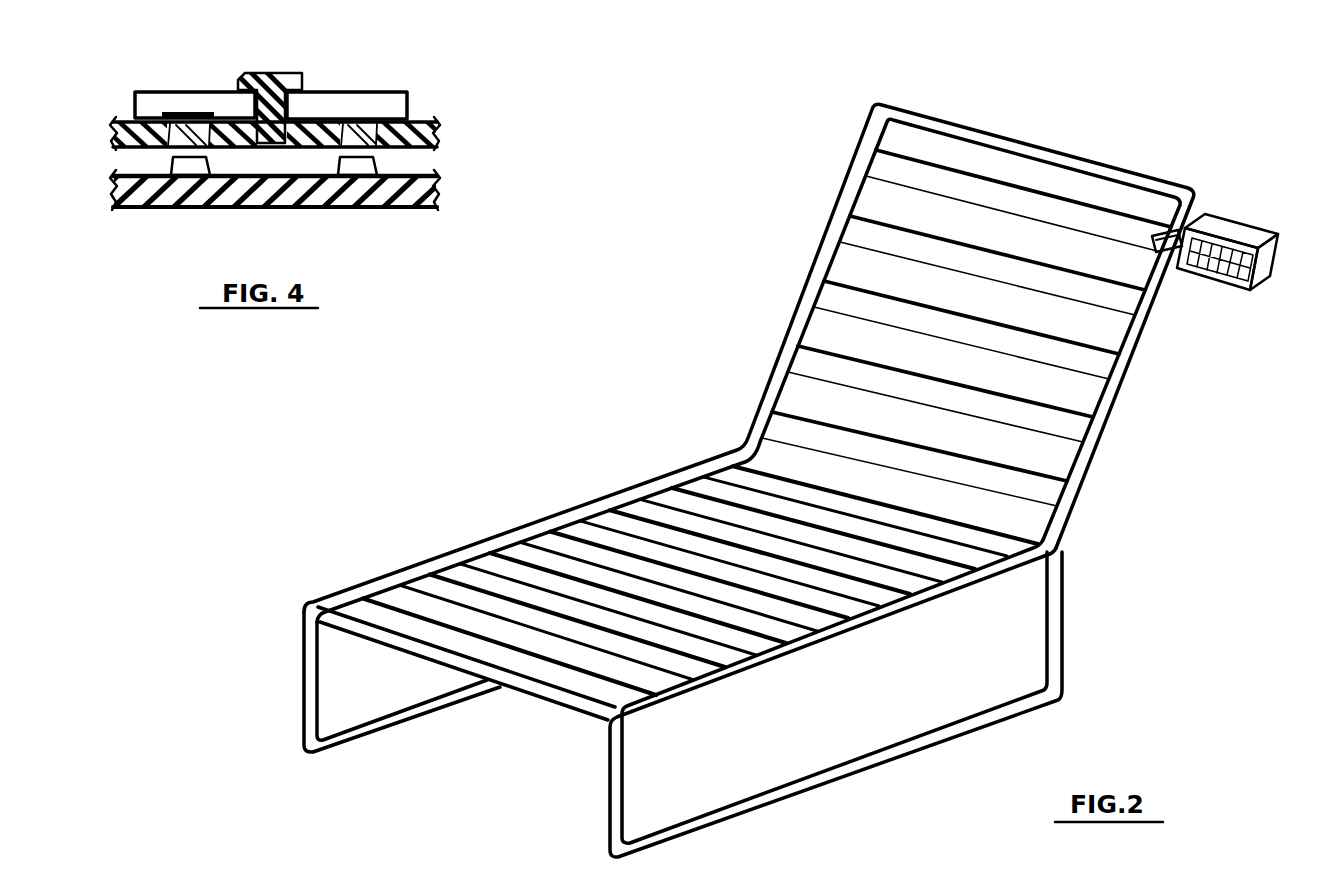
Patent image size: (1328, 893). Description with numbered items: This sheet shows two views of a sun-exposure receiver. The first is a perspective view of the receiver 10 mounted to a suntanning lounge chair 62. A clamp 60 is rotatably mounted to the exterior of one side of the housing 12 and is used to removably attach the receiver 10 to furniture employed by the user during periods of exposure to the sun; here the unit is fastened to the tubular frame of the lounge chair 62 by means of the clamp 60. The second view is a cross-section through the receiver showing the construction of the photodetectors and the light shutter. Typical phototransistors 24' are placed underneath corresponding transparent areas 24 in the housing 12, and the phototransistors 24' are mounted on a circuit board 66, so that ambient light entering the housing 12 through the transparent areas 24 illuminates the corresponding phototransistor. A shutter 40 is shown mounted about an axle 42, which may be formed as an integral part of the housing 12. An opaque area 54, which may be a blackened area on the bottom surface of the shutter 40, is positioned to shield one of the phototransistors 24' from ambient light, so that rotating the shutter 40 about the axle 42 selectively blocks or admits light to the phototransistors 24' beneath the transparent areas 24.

In FIG. 2, the receiver 10 is at (1252, 232).
In FIG. 4, the housing 12 is at (423, 121).
In FIG. 4, the transparent areas 24 is at (269, 95).
In FIG. 4, the phototransistors 24' is at (274, 202).
In FIG. 4, the shutter 40 is at (160, 91).
In FIG. 4, the axle 42 is at (272, 73).
In FIG. 4, the opaque area 54 is at (162, 113).
In FIG. 2, the clamp 60 is at (1170, 237).
In FIG. 2, the suntanning lounge chair 62 is at (827, 237).
In FIG. 4, the circuit board 66 is at (127, 206).